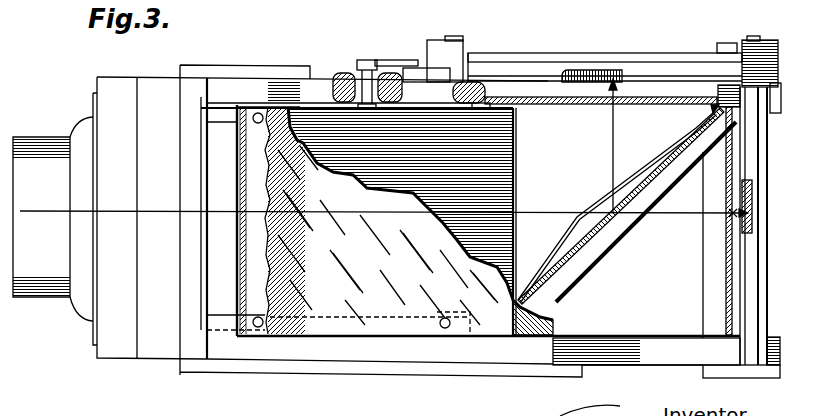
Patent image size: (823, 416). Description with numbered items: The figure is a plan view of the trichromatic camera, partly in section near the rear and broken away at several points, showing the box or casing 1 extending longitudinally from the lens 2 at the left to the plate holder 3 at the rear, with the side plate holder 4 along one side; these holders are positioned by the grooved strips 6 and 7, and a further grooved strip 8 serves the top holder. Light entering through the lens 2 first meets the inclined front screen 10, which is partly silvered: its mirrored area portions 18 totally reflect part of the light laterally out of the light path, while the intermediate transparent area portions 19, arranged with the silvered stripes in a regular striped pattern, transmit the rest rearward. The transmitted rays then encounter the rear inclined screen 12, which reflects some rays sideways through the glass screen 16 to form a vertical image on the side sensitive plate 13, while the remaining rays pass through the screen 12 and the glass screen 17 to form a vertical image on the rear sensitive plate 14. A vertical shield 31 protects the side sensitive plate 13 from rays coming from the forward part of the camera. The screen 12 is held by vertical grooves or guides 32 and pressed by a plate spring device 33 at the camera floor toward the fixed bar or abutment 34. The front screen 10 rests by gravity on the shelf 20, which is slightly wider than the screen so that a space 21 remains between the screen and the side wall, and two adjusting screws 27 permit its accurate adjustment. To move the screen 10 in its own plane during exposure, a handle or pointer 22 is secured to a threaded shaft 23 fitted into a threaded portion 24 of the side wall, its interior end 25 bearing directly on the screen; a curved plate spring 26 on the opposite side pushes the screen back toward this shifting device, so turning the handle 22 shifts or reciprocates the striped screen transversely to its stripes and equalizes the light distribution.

The box or casing 1 is at (128, 77).
The lens 2 is at (40, 137).
The plate holder 3 is at (750, 261).
The plate holder 4 is at (668, 68).
The grooved strip 6 is at (773, 60).
The grooved strip 7 is at (443, 46).
The grooved strip 8 is at (322, 370).
The front screen 10 is at (497, 176).
The rear inclined screen 12 is at (607, 252).
The sensitive plate 13 is at (590, 72).
The rear sensitive plate 14 is at (755, 196).
The screen 16 is at (583, 105).
The screen 17 is at (725, 274).
The mirrored area portions 18 is at (387, 178).
The transparent area portions 19 is at (463, 243).
The shelf 20 is at (283, 80).
The space 21 is at (307, 107).
The handle or pointer 22 is at (390, 61).
The threaded shaft 23 is at (358, 70).
The threaded portion 24 is at (342, 77).
The interior end 25 is at (370, 109).
The plate spring 26 is at (427, 339).
The adjusting screws 27 is at (255, 111).
The vertical shield 31 is at (490, 107).
The vertical grooves or guides 32 is at (710, 110).
The plate spring device 33 is at (634, 156).
The fixed bar or abutment 34 is at (625, 220).